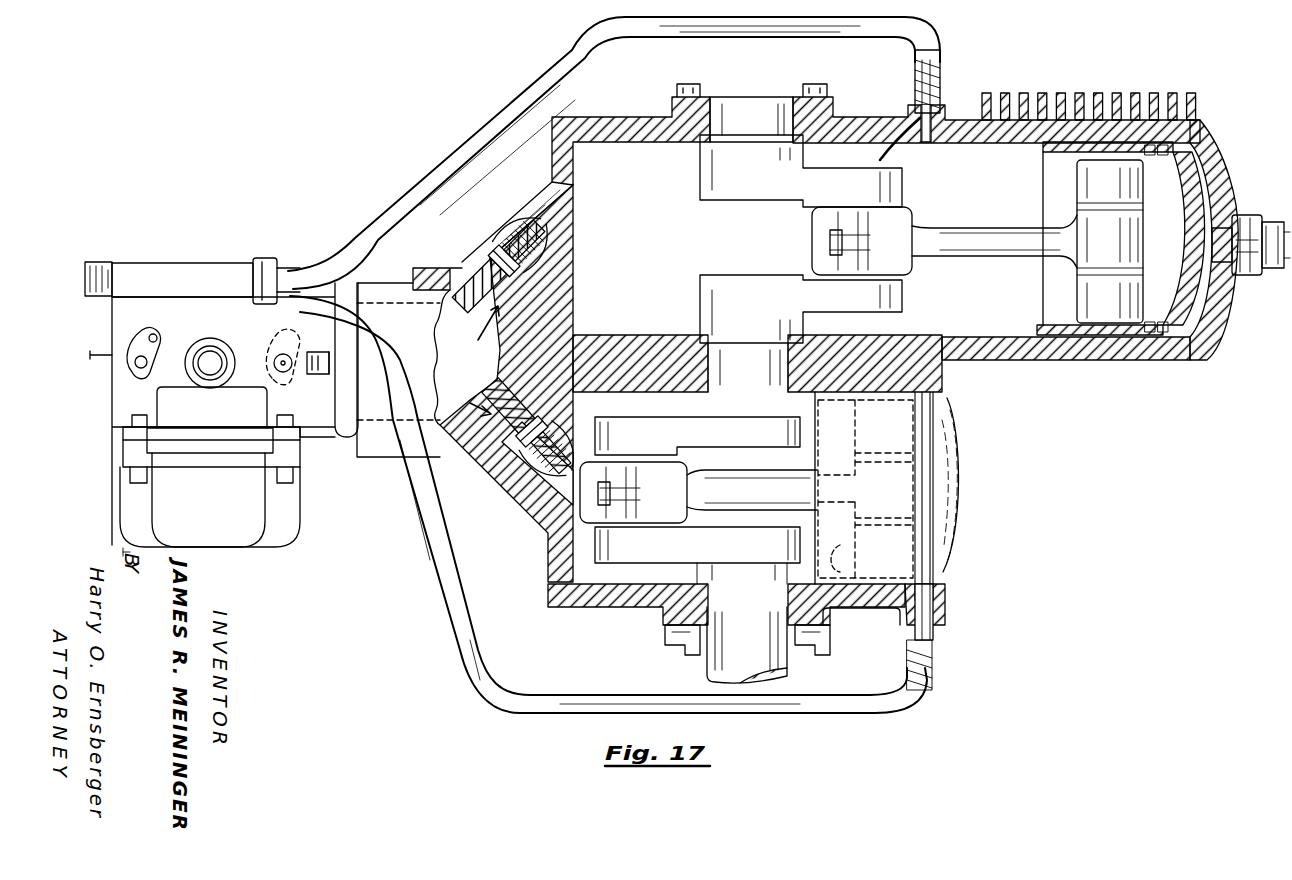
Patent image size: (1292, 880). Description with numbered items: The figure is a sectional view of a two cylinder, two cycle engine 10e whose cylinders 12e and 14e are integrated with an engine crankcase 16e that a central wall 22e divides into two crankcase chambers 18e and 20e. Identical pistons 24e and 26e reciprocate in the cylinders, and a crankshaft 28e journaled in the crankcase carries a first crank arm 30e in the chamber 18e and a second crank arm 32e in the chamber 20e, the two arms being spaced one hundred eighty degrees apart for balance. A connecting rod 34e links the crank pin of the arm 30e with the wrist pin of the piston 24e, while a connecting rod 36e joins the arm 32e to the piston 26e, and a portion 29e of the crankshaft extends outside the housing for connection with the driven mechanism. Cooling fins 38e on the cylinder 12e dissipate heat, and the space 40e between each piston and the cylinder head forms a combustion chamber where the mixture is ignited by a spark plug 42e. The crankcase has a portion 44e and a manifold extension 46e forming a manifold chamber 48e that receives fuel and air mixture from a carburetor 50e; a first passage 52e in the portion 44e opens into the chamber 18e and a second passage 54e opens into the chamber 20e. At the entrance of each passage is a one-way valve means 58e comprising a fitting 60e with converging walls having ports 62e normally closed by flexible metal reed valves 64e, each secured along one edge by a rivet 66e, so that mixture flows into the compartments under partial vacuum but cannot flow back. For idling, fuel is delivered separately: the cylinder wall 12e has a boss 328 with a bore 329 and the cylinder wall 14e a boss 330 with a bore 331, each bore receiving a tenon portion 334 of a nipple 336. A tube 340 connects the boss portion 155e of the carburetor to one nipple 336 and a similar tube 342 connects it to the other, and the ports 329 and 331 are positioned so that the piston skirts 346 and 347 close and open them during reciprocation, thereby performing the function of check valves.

The engine 10e is at (959, 86).
The cylinder 12e is at (1112, 358).
The cylinder 14e is at (955, 388).
The engine crankcase 16e is at (648, 103).
The crankcase chamber 18e is at (706, 243).
The crankcase chamber 20e is at (772, 475).
The central wall 22e is at (606, 334).
The piston 24e is at (1203, 155).
The piston 26e is at (955, 420).
The crankshaft 28e is at (716, 280).
The crankshaft portion 29e is at (790, 662).
The crank arm 30e is at (905, 190).
The crank arm 32e is at (560, 565).
The connecting rod 34e is at (1000, 226).
The connecting rod 36e is at (778, 500).
The cooling fins 38e is at (1100, 92).
The combustion chamber 40e is at (1212, 185).
The spark plug 42e is at (1268, 190).
The crankcase portion 44e is at (553, 186).
The manifold extension 46e is at (380, 270).
The manifold chamber 48e is at (468, 372).
The carburetor 50e is at (199, 251).
The first passage 52e is at (573, 232).
The second passage 54e is at (530, 532).
The one-way valve means 58e is at (486, 326).
The fitting 60e is at (486, 314).
The ports 62e is at (512, 258).
The reed valves 64e is at (535, 240).
The rivet 66e is at (492, 275).
The boss portion 155e is at (255, 258).
The boss 328 is at (908, 112).
The bore 329 is at (928, 140).
The boss 330 is at (948, 622).
The bore 331 is at (930, 580).
The tenon portions 334 is at (932, 598).
The nipples 336 is at (915, 66).
The tube 340 is at (556, 66).
The tube 342 is at (845, 716).
The piston skirt 346 is at (1045, 156).
The piston skirt 347 is at (844, 550).